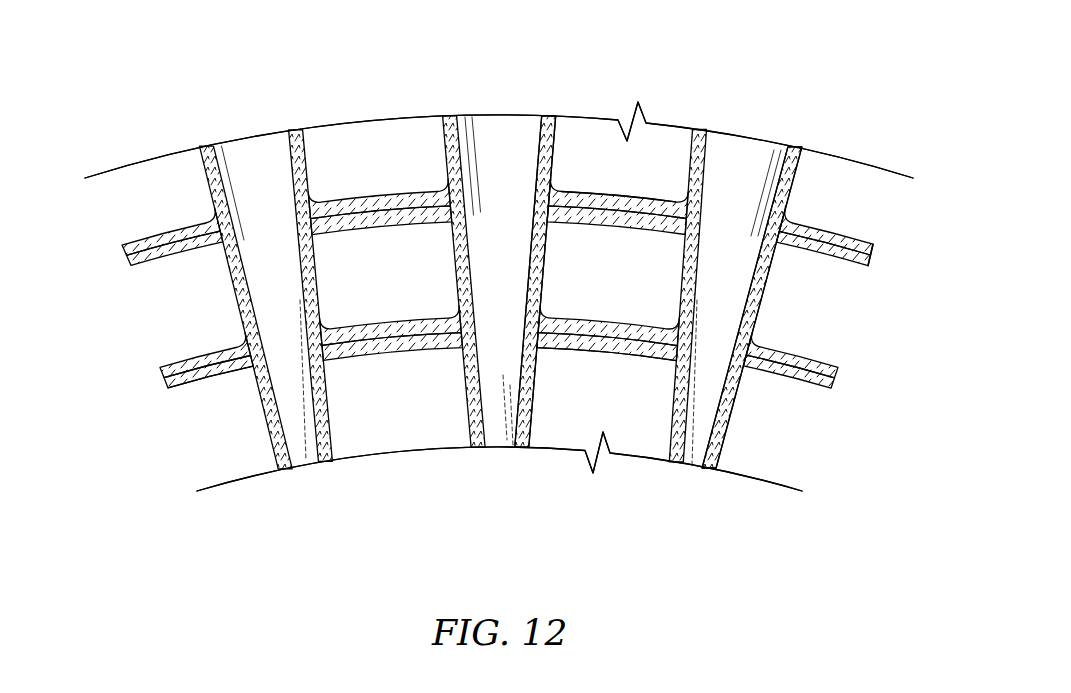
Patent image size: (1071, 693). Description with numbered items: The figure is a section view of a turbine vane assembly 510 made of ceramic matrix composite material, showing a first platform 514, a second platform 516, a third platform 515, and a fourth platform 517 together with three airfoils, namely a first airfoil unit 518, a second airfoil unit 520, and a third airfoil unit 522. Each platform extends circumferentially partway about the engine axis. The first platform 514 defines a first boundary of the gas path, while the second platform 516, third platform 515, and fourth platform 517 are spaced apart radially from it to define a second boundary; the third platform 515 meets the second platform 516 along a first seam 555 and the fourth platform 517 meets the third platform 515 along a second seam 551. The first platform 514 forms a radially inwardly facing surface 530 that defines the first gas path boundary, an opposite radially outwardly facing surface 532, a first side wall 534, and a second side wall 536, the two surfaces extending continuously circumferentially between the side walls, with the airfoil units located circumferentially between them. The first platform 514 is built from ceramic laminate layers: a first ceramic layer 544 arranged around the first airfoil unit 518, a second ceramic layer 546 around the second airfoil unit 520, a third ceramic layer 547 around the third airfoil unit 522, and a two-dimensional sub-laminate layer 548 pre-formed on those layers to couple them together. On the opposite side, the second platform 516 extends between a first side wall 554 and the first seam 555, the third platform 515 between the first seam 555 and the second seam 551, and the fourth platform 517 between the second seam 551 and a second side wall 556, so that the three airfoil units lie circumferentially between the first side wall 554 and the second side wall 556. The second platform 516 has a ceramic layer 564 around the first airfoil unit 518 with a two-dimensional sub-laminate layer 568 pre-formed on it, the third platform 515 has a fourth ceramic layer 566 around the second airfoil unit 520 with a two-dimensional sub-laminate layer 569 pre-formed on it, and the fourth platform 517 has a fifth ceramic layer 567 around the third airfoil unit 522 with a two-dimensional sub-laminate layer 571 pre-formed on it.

The turbine vane assembly 510 is at (150, 117).
The first platform 514 is at (830, 215).
The third platform 515 is at (451, 380).
The second platform 516 is at (772, 430).
The fourth platform 517 is at (198, 440).
The first airfoil unit 518 is at (775, 308).
The second airfoil unit 520 is at (545, 290).
The third airfoil unit 522 is at (323, 297).
The radially inwardly facing surface 530 is at (840, 264).
The radially outwardly facing surface 532 is at (853, 235).
The first side wall 534 is at (868, 262).
The second side wall 536 is at (120, 257).
The first ceramic layer 544 is at (672, 234).
The second ceramic layer 546 is at (568, 226).
The third ceramic layer 547 is at (336, 233).
The 2D sub-laminate layer 548 is at (618, 190).
The second seam 551 is at (403, 355).
The first side wall 554 is at (840, 378).
The first seam 555 is at (607, 357).
The second side wall 556 is at (157, 385).
The third ceramic layer 564 is at (797, 353).
The fourth ceramic layer 566 is at (570, 303).
The fifth ceramic layer 567 is at (215, 352).
The 2D sub-laminate layer 568 is at (745, 385).
The 2D sub-laminate layer 569 is at (548, 356).
The 2D sub-laminate layer 571 is at (180, 397).